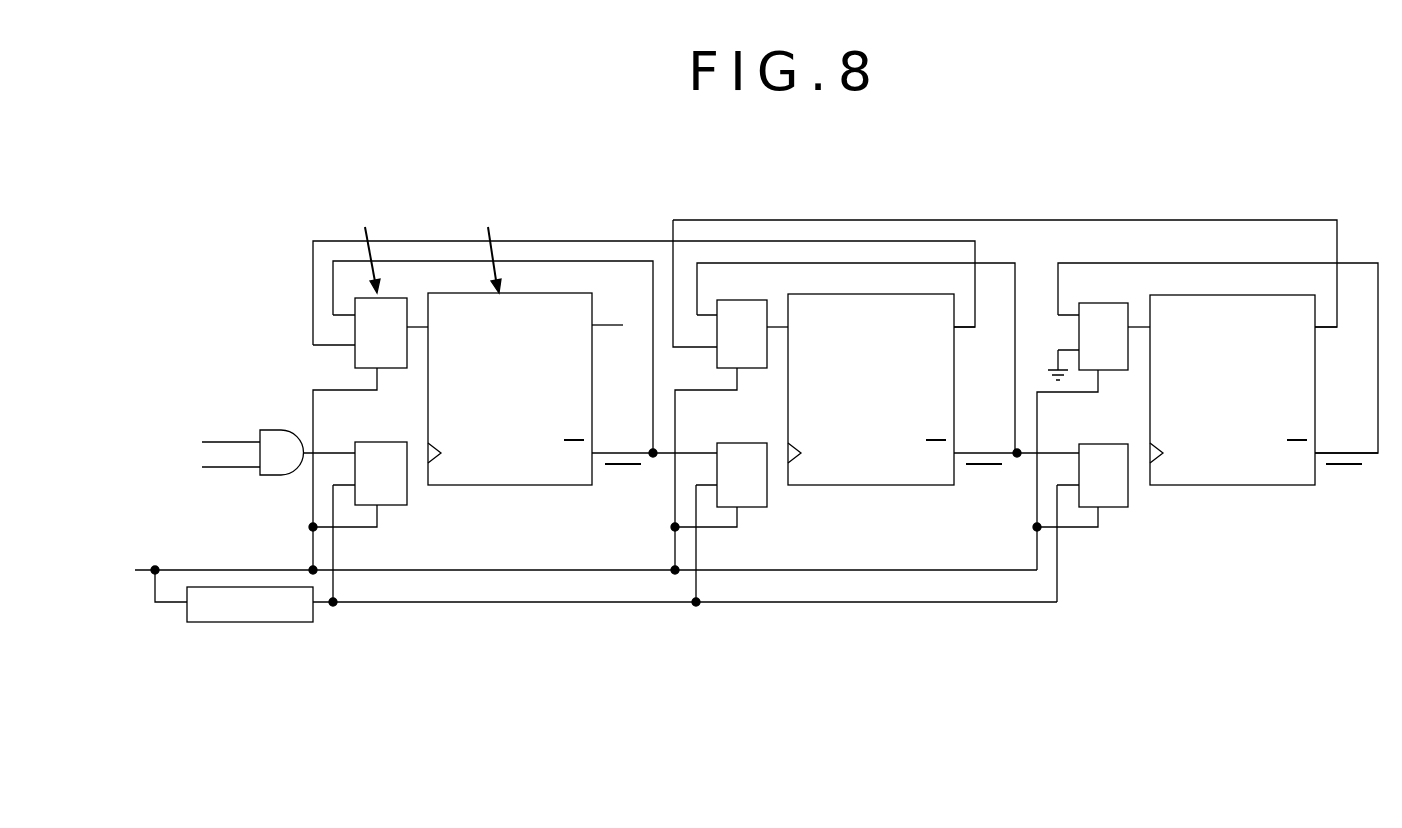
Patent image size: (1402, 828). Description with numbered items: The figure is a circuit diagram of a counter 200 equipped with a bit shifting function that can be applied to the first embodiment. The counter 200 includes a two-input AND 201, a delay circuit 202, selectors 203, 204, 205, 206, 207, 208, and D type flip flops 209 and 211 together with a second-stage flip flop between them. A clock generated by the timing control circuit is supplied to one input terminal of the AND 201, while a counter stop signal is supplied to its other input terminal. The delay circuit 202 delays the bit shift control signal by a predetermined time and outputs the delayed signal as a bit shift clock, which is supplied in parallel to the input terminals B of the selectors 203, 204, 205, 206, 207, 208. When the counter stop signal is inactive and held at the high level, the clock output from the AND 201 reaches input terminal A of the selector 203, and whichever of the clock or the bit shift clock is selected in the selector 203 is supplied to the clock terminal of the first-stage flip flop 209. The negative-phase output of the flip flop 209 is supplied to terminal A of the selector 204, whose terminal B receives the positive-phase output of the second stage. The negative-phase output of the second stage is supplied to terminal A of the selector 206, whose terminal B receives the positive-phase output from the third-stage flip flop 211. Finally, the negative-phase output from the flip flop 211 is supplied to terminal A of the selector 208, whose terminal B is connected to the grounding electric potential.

The counter 200 is at (765, 162).
The 2-input AND 201 is at (270, 428).
The delay circuit 202 is at (250, 623).
The selector 203 is at (397, 505).
The selector 204 is at (390, 298).
The selector 205 is at (755, 507).
The selector 206 is at (740, 300).
The selector 207 is at (1115, 507).
The selector 208 is at (1100, 303).
The D type flip flop 209 is at (508, 485).
The D type flip flop 211 is at (1230, 485).